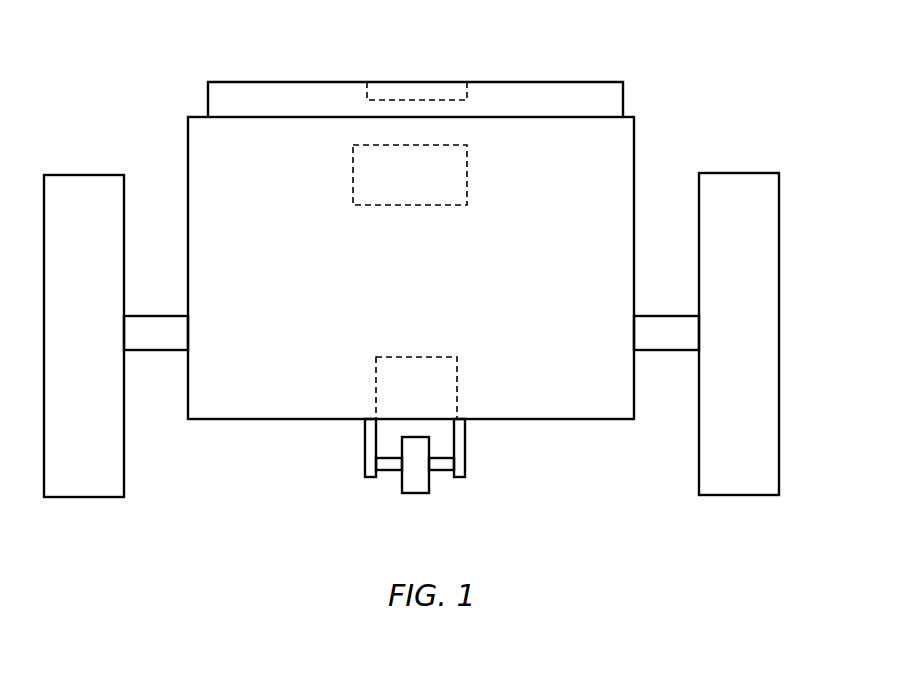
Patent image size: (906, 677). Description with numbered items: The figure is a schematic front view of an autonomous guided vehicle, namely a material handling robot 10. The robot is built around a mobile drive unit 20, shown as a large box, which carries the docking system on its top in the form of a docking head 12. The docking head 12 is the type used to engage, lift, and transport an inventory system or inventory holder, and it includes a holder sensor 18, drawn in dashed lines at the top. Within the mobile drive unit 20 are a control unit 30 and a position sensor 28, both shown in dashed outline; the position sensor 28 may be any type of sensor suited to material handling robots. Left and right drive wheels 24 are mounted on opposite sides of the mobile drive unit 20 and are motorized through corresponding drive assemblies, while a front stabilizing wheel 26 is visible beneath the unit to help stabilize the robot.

The material handling robot 10 is at (190, 36).
The docking head 12 is at (610, 97).
The holder sensor 18 is at (447, 90).
The mobile drive unit 20 is at (590, 408).
The drive wheels 24 is at (81, 485).
The stabilizing wheels 26 is at (418, 487).
The position sensor 28 is at (445, 375).
The control unit 30 is at (352, 163).